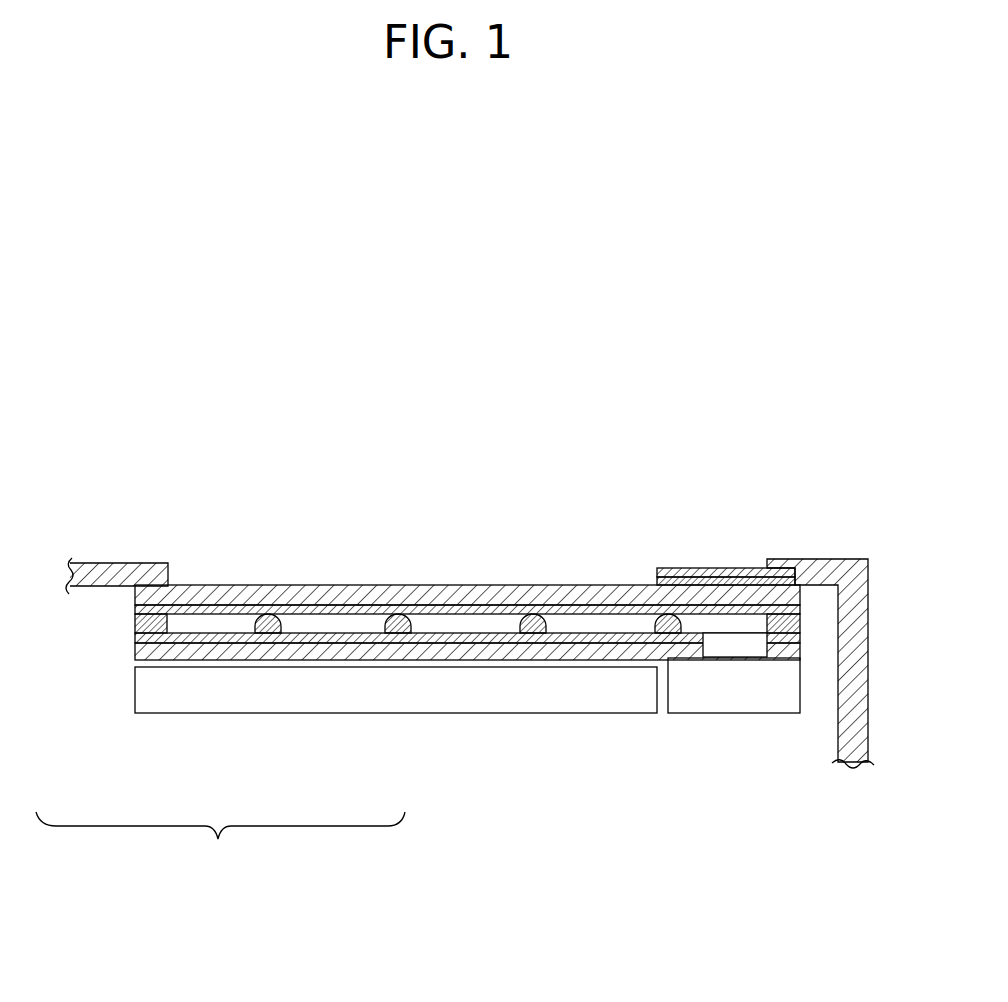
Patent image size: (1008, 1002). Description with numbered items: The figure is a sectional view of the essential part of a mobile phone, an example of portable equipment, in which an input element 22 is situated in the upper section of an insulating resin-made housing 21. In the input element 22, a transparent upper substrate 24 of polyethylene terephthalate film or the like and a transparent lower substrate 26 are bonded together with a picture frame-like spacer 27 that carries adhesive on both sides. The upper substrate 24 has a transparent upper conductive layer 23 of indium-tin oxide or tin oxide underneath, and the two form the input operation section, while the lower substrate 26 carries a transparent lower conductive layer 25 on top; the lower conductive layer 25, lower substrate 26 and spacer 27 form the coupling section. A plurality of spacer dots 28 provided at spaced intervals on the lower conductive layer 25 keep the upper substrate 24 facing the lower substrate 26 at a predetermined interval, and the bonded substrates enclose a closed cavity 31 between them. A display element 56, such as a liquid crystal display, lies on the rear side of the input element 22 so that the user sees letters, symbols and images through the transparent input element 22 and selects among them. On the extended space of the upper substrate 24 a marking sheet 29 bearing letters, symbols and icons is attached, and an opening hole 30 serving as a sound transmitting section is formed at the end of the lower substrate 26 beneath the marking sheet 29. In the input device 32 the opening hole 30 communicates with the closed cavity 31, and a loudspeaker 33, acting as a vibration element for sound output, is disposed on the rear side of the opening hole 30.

The housing 21 is at (828, 563).
The input element 22 is at (232, 873).
The upper conductive layer 23 is at (291, 603).
The upper substrate 24 is at (329, 609).
The lower conductive layer 25 is at (213, 637).
The lower substrate 26 is at (178, 648).
The spacer 27 is at (132, 632).
The spacer dots 28 is at (266, 620).
The marking sheet 29 is at (717, 568).
The opening hole 30 is at (722, 647).
The closed cavity 31 is at (627, 622).
The input device 32 is at (485, 577).
The loudspeaker 33 is at (743, 687).
The display element 56 is at (482, 695).